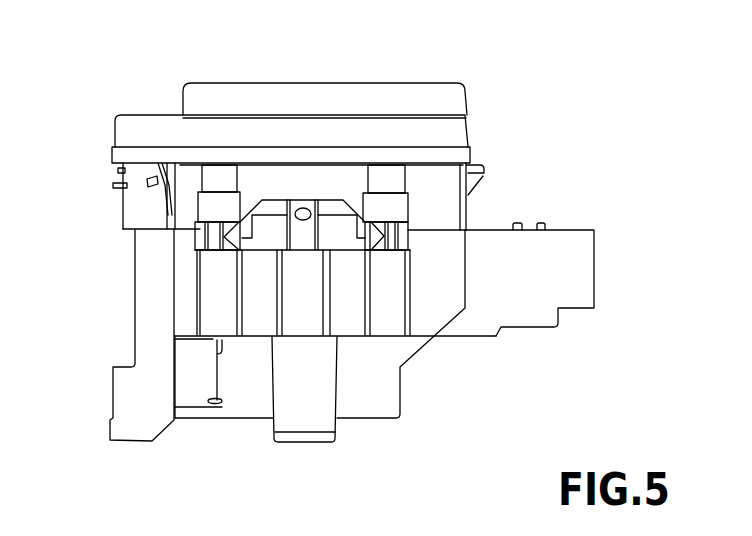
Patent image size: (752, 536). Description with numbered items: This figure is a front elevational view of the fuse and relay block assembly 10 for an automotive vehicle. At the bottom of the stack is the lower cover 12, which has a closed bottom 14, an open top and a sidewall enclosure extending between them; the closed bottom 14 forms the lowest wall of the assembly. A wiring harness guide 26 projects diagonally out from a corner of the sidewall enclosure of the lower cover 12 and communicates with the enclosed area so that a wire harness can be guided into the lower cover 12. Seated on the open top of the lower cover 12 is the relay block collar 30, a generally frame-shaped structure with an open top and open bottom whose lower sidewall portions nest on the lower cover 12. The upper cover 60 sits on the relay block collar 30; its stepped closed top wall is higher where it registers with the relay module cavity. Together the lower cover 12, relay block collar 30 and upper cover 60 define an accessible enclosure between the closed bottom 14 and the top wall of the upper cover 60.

The fuse and relay block assembly 10 is at (537, 171).
The lower cover 12 is at (135, 264).
The closed bottom 14 is at (367, 420).
The wiring harness guide 26 is at (553, 293).
The relay block collar 30 is at (122, 209).
The upper cover 60 is at (423, 97).